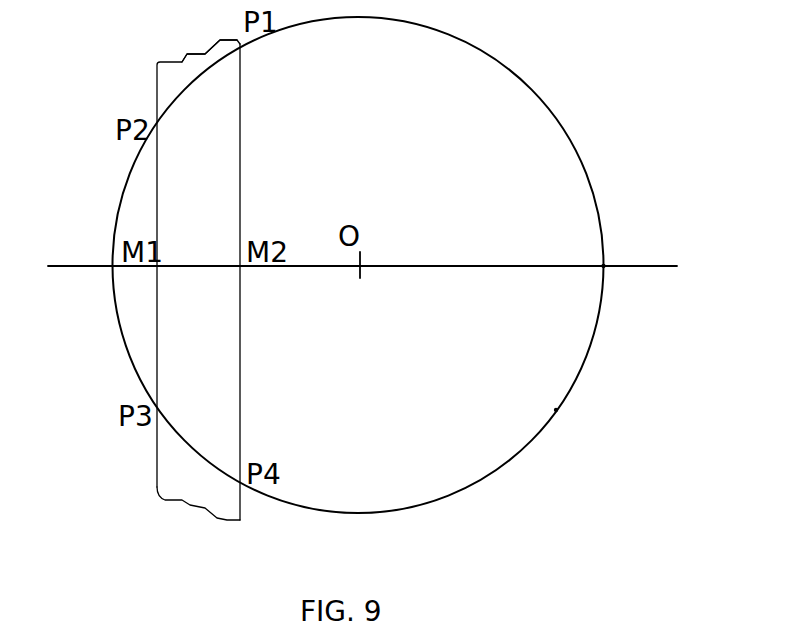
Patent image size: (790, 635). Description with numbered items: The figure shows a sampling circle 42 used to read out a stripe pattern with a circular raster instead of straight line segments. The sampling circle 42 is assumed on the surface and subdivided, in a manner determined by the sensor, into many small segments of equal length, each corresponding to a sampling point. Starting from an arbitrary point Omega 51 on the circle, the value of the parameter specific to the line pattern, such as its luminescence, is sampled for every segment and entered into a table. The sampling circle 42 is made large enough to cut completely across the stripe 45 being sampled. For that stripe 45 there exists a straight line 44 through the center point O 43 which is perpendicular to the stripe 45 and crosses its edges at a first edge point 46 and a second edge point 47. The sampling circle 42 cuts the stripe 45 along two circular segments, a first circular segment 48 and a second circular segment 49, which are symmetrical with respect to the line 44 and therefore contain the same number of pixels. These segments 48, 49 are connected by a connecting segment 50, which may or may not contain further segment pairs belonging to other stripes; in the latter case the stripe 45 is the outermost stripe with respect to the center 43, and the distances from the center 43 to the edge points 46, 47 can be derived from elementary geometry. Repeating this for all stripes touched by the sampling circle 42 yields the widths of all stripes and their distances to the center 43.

The sampling circle 42 is at (506, 62).
The point O 43 is at (361, 263).
The straight line 44 is at (604, 266).
The stripe 45 is at (157, 92).
The point M1 46 is at (113, 296).
The point M2 47 is at (241, 268).
The circular segment P1_P2 48 is at (190, 58).
The circular segment P3_P4 49 is at (210, 505).
The segment P2_P3 50 is at (120, 352).
The point Omega 51 is at (572, 440).